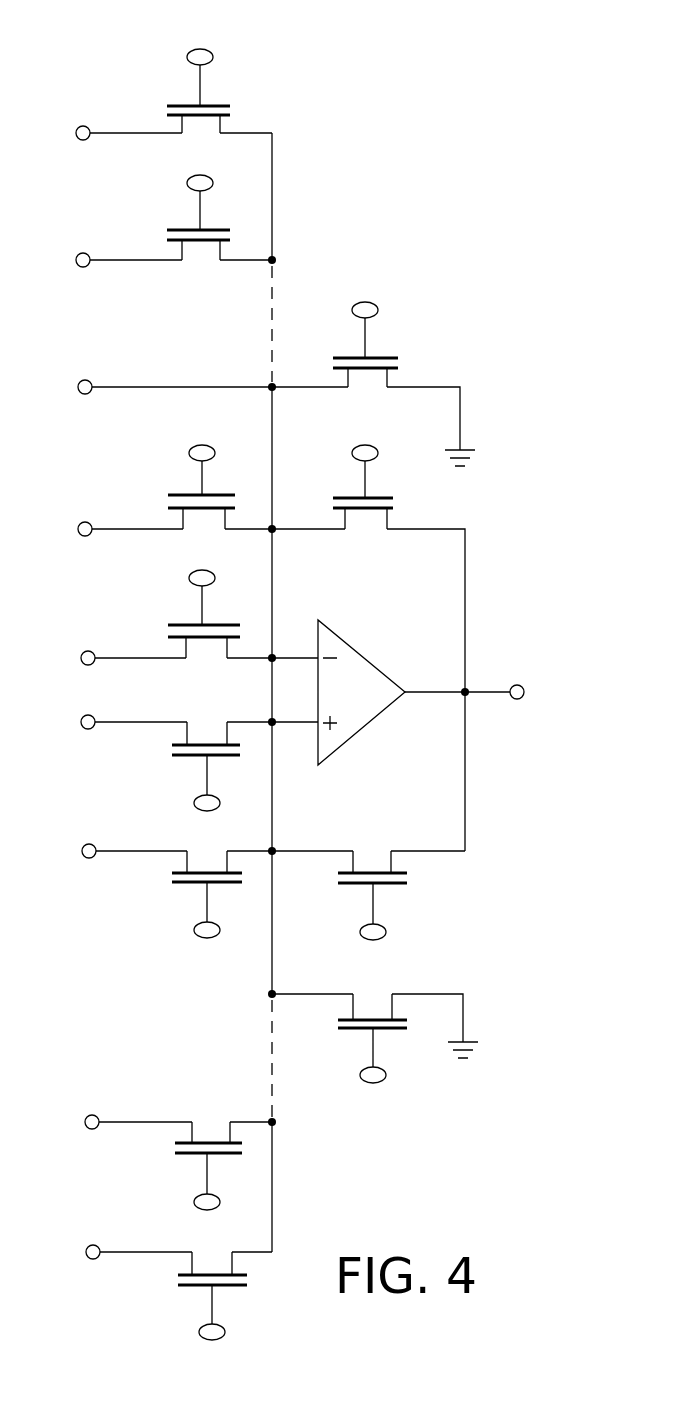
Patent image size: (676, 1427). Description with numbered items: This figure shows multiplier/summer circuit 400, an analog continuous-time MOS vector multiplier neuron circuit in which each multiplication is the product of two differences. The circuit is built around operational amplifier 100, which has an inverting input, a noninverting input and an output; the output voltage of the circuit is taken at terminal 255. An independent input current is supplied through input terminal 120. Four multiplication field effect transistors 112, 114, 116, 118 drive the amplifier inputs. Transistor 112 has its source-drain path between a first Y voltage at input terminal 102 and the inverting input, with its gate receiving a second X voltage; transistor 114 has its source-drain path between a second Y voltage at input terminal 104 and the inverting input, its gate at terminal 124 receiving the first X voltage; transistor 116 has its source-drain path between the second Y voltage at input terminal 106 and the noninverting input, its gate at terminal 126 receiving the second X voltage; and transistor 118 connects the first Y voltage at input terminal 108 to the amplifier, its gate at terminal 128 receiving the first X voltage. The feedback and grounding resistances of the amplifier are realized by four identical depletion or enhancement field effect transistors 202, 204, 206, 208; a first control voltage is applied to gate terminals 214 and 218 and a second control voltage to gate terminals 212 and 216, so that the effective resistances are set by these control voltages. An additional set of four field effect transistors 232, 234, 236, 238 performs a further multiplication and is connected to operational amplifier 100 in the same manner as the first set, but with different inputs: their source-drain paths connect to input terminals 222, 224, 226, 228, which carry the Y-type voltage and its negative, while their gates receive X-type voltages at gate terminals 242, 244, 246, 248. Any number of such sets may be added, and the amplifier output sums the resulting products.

The multiplier/summer circuit 400 is at (523, 334).
The operational amplifier 100 is at (362, 681).
The input terminal 102 is at (123, 510).
The input terminal 104 is at (124, 641).
The input terminal 106 is at (134, 706).
The input terminal 108 is at (130, 835).
The field effect transistor 112 is at (199, 495).
The field effect transistor 114 is at (221, 622).
The field effect transistor 116 is at (221, 758).
The field effect transistor 118 is at (201, 886).
The input terminal 120 is at (205, 367).
The input terminal 124 is at (175, 580).
The input terminal 126 is at (181, 805).
The input terminal 128 is at (175, 932).
The field effect transistor 202 is at (404, 392).
The field effect transistor 204 is at (368, 656).
The field effect transistor 206 is at (368, 887).
The field effect transistor 208 is at (375, 1030).
The input terminal 212 is at (340, 313).
The input terminal 214 is at (339, 455).
The input terminal 216 is at (344, 933).
The input terminal 218 is at (348, 1077).
The input terminal 222 is at (116, 116).
The input terminal 224 is at (116, 243).
The input terminal 226 is at (132, 1103).
The input terminal 228 is at (131, 1234).
The field effect transistor 232 is at (194, 99).
The field effect transistor 234 is at (194, 225).
The field effect transistor 236 is at (197, 1158).
The field effect transistor 238 is at (198, 1288).
The gate terminal Xn2 / X12 242 is at (171, 255).
The input terminal 244 is at (170, 182).
The gate terminal Xn2 246 is at (176, 1203).
The input terminal 248 is at (181, 1333).
The output terminal Vo 255 is at (475, 673).